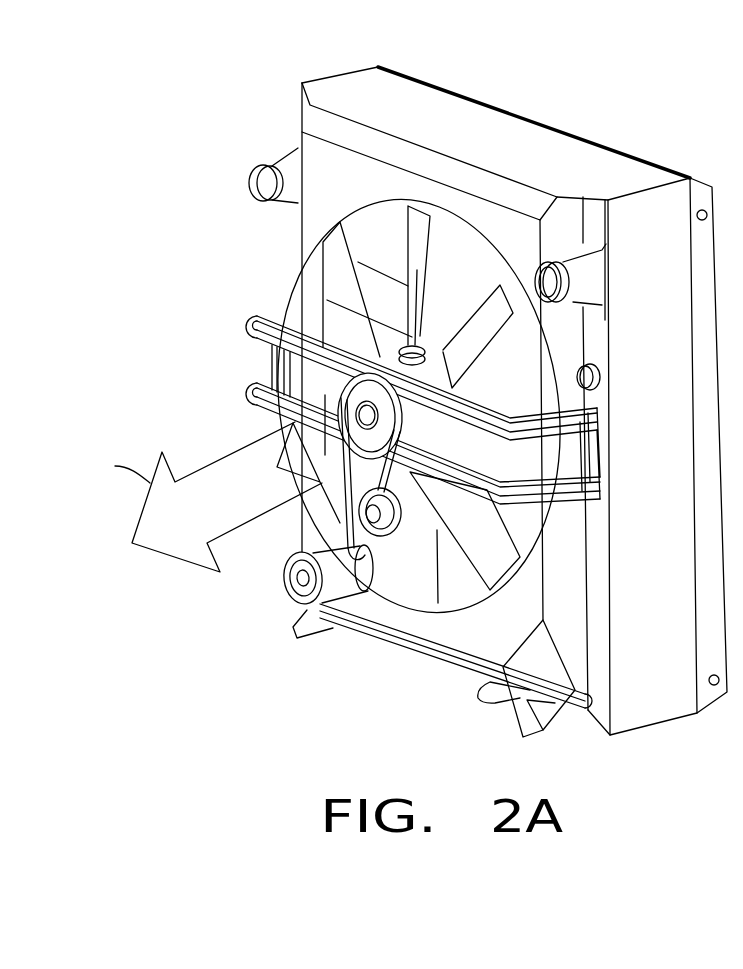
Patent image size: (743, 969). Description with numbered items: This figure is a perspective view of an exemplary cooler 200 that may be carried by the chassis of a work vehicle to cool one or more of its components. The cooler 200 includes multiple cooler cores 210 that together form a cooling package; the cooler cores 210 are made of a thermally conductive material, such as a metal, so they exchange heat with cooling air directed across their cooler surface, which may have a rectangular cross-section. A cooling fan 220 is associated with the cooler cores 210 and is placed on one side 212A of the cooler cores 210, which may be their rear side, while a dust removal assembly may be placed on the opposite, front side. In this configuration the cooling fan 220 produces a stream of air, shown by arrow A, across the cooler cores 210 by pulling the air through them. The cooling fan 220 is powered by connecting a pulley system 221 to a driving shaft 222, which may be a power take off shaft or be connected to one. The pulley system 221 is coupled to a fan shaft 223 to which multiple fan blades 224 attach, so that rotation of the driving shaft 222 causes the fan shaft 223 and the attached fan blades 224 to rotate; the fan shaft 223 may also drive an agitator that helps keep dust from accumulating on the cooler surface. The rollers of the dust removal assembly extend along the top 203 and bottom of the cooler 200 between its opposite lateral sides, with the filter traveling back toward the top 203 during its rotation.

The cooler 200 is at (594, 116).
The top 203 is at (620, 167).
The cooler cores 210 is at (342, 326).
The one side of the cooler cores 212A is at (430, 284).
The cooling fan 220 is at (262, 318).
The pulley system 221 is at (338, 608).
The driving shaft 222 is at (290, 590).
The fan shaft 223 is at (270, 385).
The fan blades 224 is at (500, 310).